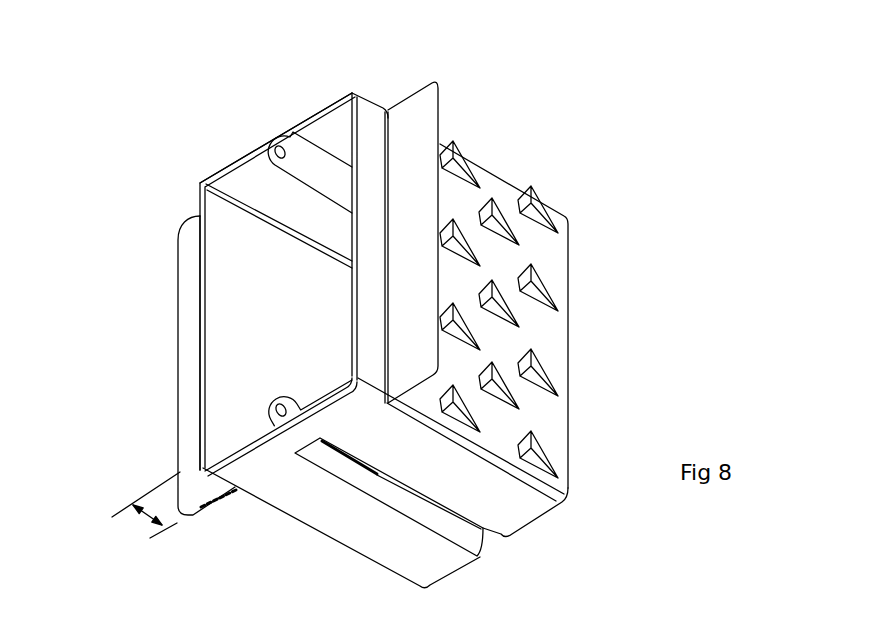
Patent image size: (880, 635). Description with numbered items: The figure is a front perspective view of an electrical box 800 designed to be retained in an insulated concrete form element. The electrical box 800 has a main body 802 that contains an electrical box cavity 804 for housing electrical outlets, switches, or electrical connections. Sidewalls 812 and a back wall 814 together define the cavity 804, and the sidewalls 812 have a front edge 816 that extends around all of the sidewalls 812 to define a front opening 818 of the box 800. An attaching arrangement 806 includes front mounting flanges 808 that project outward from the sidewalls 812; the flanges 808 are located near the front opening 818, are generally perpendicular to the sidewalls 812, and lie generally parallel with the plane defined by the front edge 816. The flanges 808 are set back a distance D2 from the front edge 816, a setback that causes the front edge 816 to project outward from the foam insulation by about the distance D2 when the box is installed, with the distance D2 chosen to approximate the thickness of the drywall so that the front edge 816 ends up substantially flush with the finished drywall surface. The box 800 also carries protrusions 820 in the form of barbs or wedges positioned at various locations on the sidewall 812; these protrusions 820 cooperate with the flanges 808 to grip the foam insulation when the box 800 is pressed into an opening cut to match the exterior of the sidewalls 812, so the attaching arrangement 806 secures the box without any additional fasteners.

The electrical box 800 is at (232, 118).
The main body 802 is at (285, 495).
The electrical box cavity 804 is at (268, 273).
The attaching arrangement 806 is at (520, 160).
The front mounting flanges 808 is at (185, 436).
The sidewalls 812 is at (360, 533).
The back wall 814 is at (537, 526).
The front edge 816 is at (323, 109).
The front opening 818 is at (240, 330).
The protrusions 820 is at (548, 378).
The distance D2 is at (143, 512).